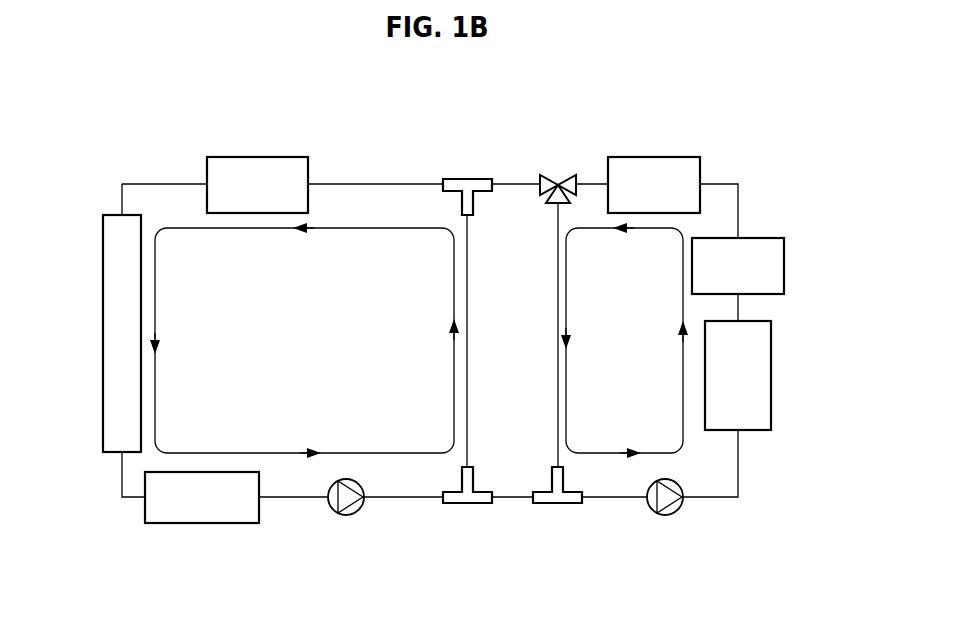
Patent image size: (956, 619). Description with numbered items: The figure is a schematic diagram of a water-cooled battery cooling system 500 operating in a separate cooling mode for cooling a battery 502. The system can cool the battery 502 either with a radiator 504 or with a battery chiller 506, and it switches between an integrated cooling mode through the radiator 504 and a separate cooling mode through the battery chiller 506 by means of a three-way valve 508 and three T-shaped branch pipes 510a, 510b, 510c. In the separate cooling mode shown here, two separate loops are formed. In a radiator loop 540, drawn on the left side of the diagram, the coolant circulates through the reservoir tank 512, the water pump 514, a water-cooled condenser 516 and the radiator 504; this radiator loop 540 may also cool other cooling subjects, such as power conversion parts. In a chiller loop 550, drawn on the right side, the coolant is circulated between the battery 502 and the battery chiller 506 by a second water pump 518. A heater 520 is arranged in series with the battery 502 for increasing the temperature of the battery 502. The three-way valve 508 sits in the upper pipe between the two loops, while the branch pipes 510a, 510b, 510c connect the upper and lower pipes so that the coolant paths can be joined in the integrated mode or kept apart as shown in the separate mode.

The battery cooling system 500 is at (394, 91).
The battery 502 is at (771, 373).
The radiator 504 is at (102, 339).
The battery chiller 506 is at (653, 157).
The three-way valve 508 is at (560, 175).
The T-shaped branch pipe 510a is at (466, 178).
The T-shaped branch pipe 510b is at (465, 504).
The T-shaped branch pipe 510c is at (556, 504).
The reservoir tank 512 is at (201, 524).
The water pump 514 is at (350, 515).
The water-cooled condenser 516 is at (254, 157).
The water pump 518 is at (669, 516).
The heater 520 is at (763, 236).
The radiator loop 540 is at (244, 230).
The chiller loop 550 is at (600, 230).